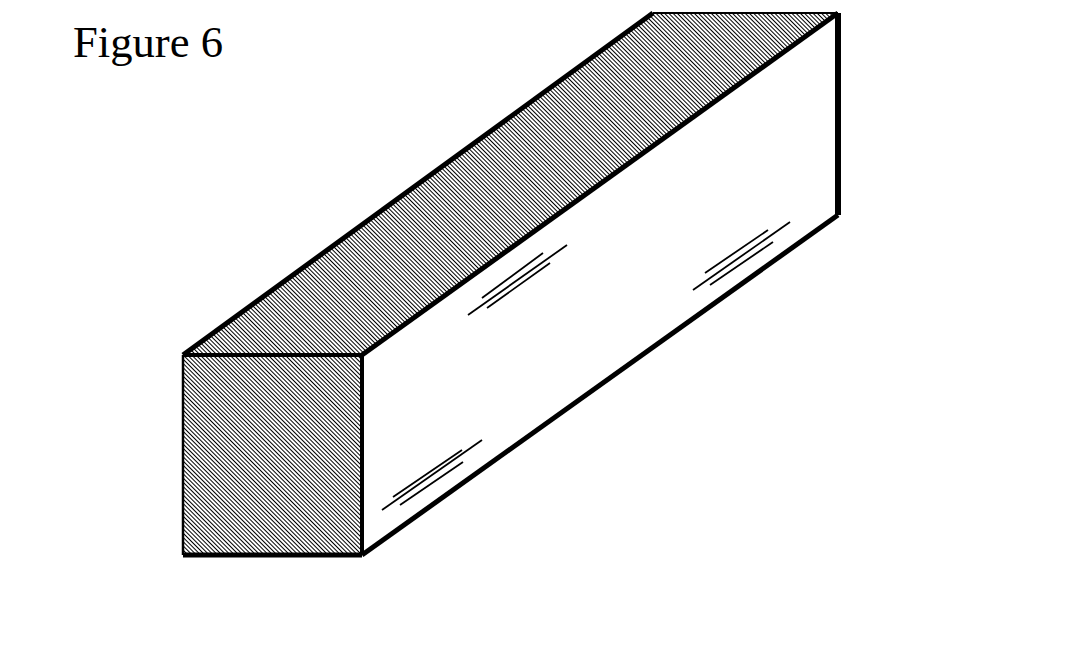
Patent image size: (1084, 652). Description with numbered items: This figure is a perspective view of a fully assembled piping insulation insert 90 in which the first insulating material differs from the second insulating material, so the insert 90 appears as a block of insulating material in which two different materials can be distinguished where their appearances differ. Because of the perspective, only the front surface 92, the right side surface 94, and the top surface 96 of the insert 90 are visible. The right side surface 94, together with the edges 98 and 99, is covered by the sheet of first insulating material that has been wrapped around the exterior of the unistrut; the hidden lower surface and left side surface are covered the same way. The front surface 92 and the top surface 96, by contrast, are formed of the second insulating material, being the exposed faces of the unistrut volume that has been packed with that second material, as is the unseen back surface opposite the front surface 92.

The piping insulation insert 90 is at (501, 284).
The front surface 92 is at (336, 441).
The right side surface 94 is at (775, 163).
The top surface 96 is at (698, 75).
The edge 98 is at (738, 105).
The edge 99 is at (422, 193).